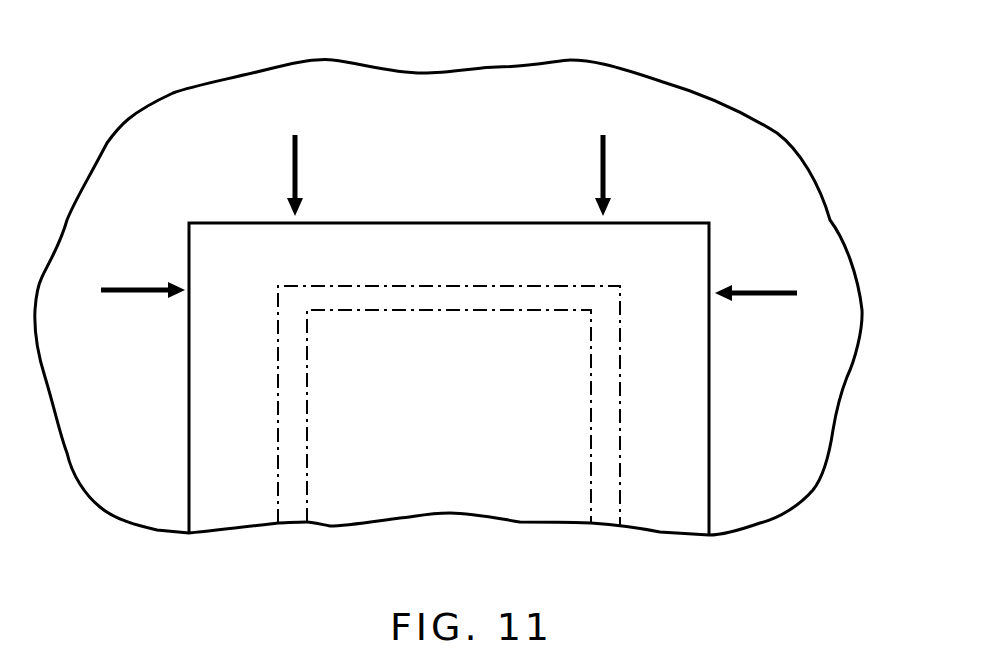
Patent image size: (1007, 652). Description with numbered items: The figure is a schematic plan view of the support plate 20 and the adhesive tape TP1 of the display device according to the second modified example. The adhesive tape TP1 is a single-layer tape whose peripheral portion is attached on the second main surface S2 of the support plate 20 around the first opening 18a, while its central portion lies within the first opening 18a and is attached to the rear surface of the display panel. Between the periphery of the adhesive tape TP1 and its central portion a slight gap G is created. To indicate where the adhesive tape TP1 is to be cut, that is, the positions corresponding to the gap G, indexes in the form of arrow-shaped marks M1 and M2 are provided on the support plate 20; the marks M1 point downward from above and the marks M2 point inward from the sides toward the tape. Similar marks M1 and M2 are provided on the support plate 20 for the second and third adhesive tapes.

The support plate 20 is at (466, 87).
The second main surface S2 is at (363, 98).
The adhesive tape TP1 is at (237, 507).
The first opening 18a is at (618, 393).
The gap G is at (603, 513).
The arrow-shaped mark M1 is at (292, 160).
The arrow-shaped mark M2 is at (130, 288).